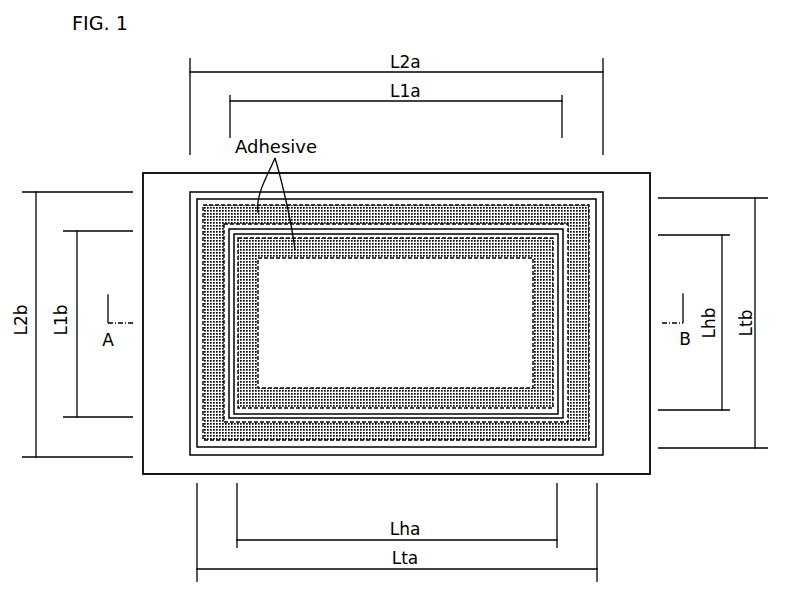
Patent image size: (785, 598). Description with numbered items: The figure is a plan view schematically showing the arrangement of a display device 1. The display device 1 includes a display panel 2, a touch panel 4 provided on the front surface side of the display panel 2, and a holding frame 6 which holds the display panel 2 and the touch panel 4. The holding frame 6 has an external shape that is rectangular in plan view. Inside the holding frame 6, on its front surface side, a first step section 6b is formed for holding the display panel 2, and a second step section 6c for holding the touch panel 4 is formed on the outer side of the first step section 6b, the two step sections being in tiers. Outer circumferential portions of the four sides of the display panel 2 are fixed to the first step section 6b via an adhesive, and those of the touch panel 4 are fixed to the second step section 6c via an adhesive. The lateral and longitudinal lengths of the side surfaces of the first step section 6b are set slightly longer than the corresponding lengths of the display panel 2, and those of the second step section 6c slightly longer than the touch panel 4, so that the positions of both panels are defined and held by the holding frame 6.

The display device 1 is at (676, 126).
The display panel 2 is at (350, 237).
The touch panel 4 is at (447, 202).
The holding frame 6 is at (532, 188).
The first step section 6b is at (403, 230).
The second step section 6c is at (486, 192).